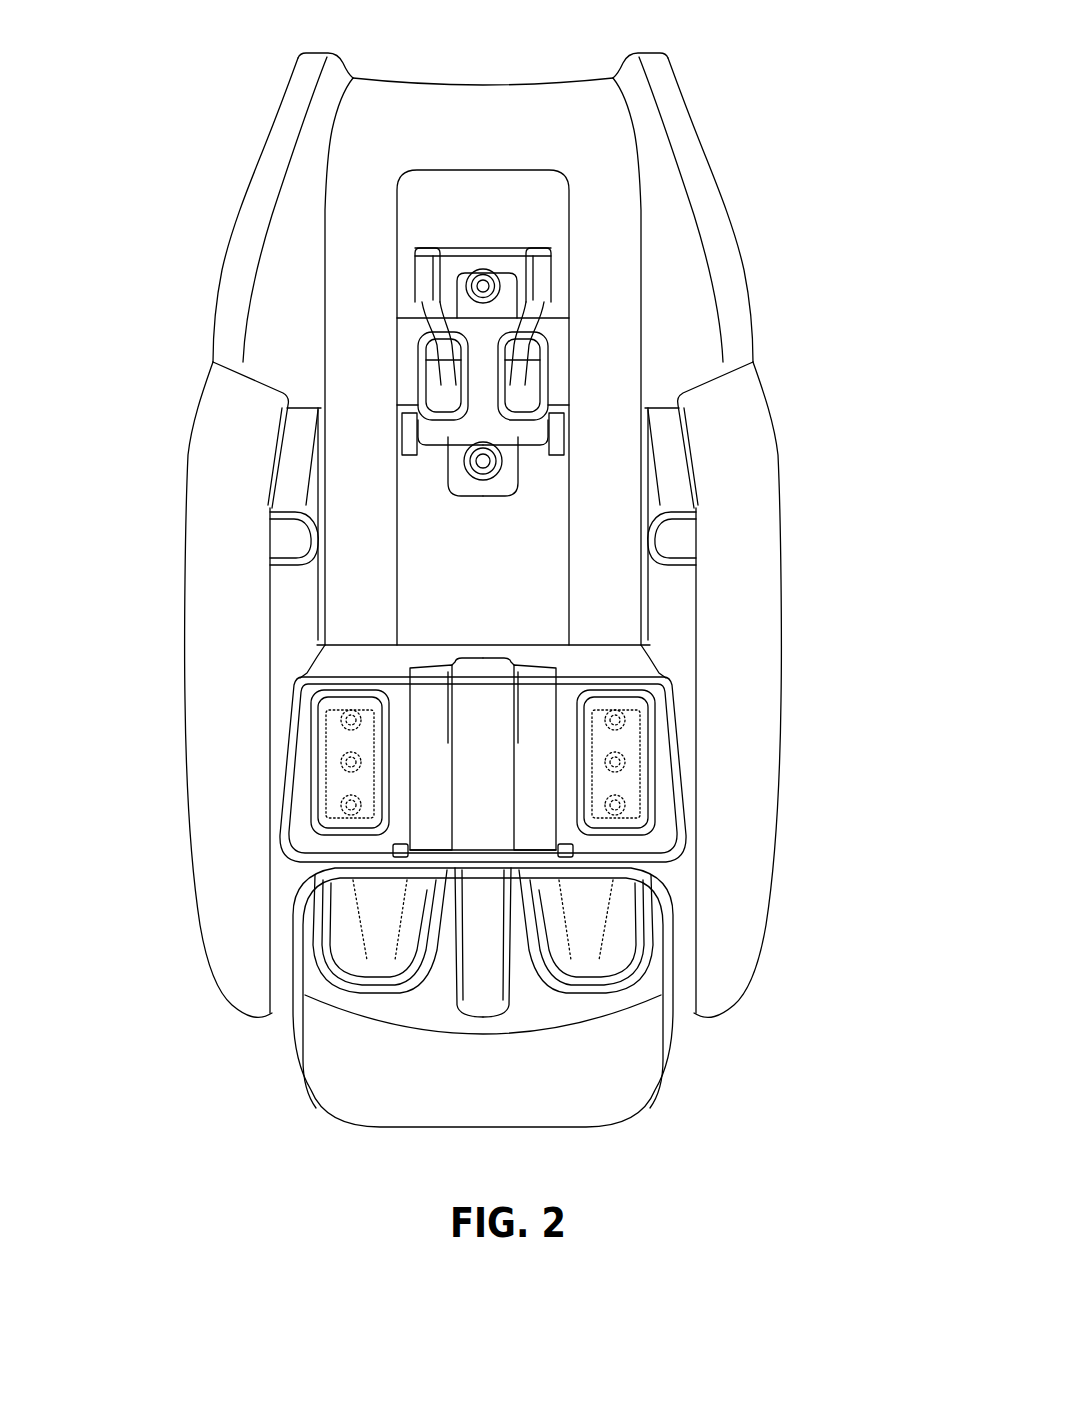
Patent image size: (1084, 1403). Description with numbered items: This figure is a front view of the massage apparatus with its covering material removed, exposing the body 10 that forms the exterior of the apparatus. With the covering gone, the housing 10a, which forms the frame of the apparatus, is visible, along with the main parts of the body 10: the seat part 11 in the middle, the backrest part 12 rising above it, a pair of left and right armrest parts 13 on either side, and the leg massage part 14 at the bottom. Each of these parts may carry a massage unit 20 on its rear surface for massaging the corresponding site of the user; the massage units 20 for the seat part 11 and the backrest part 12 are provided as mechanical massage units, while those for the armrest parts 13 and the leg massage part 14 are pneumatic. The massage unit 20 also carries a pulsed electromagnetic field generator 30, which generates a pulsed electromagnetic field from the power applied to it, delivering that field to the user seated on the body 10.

The body 10 is at (703, 103).
The housing 10a is at (712, 182).
The seat part 11 is at (343, 665).
The backrest part 12 is at (388, 128).
The armrest parts 13 is at (298, 457).
The leg massage part 14 is at (562, 1041).
The massage unit 20 is at (553, 353).
The pulsed electromagnetic field generator 30 is at (481, 267).